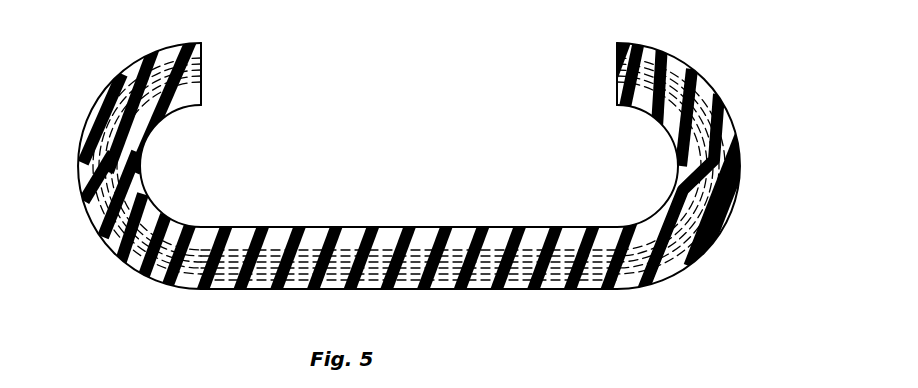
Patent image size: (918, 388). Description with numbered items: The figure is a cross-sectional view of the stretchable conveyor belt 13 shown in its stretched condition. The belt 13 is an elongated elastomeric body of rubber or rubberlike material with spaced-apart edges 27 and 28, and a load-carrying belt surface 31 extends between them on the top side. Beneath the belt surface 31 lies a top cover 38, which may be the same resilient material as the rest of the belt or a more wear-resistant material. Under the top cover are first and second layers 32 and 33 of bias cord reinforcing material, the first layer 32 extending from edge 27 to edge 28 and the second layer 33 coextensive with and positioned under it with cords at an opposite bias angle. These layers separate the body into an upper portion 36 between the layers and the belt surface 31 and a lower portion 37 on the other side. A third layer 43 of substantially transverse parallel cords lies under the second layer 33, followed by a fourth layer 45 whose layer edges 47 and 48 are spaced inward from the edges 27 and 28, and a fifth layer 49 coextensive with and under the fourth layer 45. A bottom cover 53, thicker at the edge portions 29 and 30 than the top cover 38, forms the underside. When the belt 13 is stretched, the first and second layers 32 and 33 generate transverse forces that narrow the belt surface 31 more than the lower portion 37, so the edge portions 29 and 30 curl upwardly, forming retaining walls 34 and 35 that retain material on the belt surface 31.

The conveyor belt 13 is at (635, 47).
The edge 27 is at (202, 50).
The edge 28 is at (620, 47).
The edge portion 29 is at (147, 65).
The edge portion 30 is at (667, 67).
The belt surface 31 is at (333, 227).
The first layer 32 is at (695, 93).
The second layer 33 is at (710, 88).
The retaining wall 34 is at (83, 137).
The retaining wall 35 is at (733, 150).
The upper portion 36 is at (247, 237).
The lower portion 37 is at (297, 277).
The top cover 38 is at (668, 127).
The third layer 43 is at (127, 97).
The fourth layer 45 is at (592, 277).
The layer edge 47 is at (200, 270).
The layer edge 48 is at (624, 282).
The fifth layer 49 is at (552, 280).
The bottom cover 53 is at (512, 283).